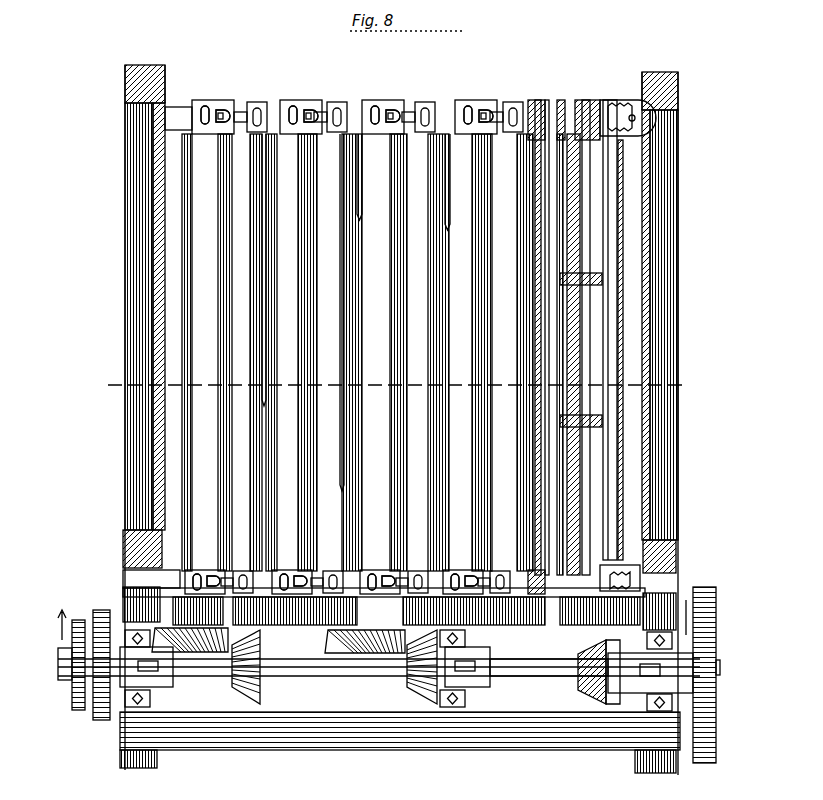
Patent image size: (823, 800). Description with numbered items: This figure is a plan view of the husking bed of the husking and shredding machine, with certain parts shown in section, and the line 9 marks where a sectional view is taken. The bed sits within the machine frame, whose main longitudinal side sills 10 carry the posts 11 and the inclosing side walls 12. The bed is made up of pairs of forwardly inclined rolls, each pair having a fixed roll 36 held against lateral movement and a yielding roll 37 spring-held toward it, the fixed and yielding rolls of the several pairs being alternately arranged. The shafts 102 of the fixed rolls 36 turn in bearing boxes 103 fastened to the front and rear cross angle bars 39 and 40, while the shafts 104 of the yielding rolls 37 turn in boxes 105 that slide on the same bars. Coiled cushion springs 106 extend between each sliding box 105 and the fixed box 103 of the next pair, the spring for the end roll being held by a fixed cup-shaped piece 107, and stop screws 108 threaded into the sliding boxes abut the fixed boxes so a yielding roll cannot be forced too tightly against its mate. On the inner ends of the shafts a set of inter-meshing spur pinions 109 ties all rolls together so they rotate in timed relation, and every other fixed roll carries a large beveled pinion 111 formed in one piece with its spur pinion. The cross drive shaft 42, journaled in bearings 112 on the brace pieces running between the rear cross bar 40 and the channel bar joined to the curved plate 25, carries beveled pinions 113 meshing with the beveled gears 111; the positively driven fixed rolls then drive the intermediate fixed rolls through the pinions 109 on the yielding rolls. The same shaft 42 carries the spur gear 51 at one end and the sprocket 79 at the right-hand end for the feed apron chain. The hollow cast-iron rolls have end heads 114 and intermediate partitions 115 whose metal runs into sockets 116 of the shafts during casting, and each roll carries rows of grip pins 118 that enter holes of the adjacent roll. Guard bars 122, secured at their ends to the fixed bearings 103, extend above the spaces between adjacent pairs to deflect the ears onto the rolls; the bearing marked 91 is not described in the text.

The section line 9— 9 is at (364, 617).
The main longitudinal side sill 10 is at (140, 128).
The post 11 is at (124, 80).
The inclosing side wall 12 is at (152, 220).
The curved plate 25 is at (345, 662).
The fixed husking roll 36 is at (327, 352).
The yielding husking roll 37 is at (375, 352).
The front cross bar 39 is at (178, 108).
The rear cross bar 40 is at (123, 578).
The drive shaft 42 is at (340, 668).
The spur gear 51 is at (98, 712).
The sprocket 79 is at (78, 705).
The bearing 91 is at (150, 698).
The fixed roll shaft 102 is at (540, 668).
The fixed bearing box 103 is at (200, 104).
The yielding roll shaft 104 is at (586, 100).
The sliding bearing box 105 is at (256, 104).
The coiled cushion spring 106 is at (280, 104).
The cup-shaped piece 107 is at (640, 102).
The stop screw 108 is at (240, 104).
The spur pinion 109 is at (355, 625).
The beveled pinion 111 is at (222, 655).
The bearing 112 is at (60, 670).
The beveled pinion 113 is at (258, 700).
The end head 114 is at (618, 160).
The intermediate partition 115 is at (580, 260).
The socket 116 is at (602, 280).
The grip pin 118 is at (623, 200).
The guard bar 122 is at (452, 206).